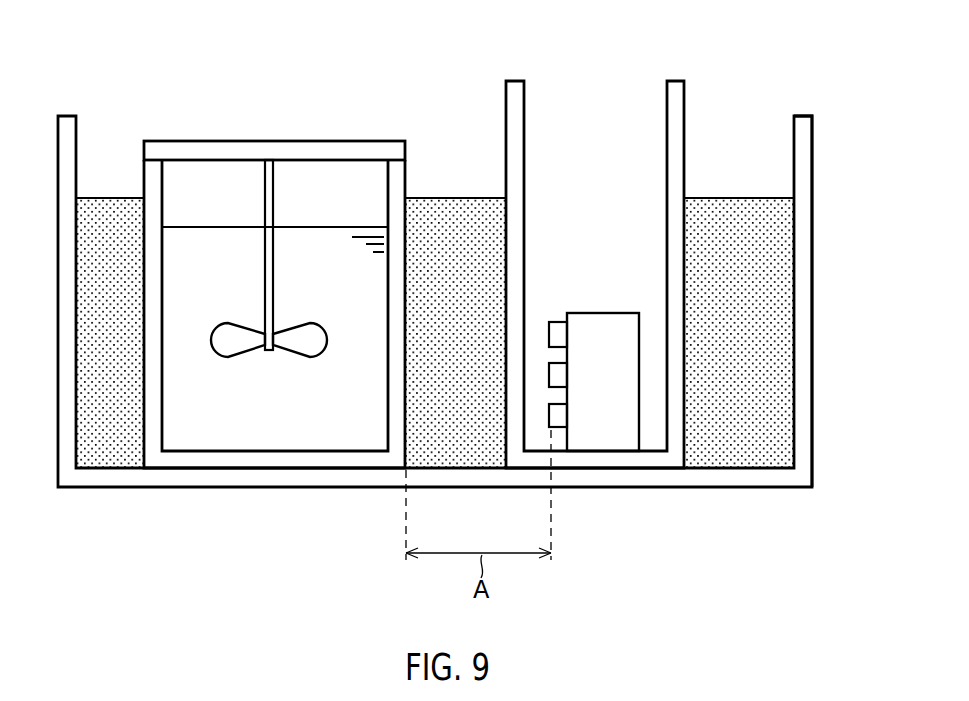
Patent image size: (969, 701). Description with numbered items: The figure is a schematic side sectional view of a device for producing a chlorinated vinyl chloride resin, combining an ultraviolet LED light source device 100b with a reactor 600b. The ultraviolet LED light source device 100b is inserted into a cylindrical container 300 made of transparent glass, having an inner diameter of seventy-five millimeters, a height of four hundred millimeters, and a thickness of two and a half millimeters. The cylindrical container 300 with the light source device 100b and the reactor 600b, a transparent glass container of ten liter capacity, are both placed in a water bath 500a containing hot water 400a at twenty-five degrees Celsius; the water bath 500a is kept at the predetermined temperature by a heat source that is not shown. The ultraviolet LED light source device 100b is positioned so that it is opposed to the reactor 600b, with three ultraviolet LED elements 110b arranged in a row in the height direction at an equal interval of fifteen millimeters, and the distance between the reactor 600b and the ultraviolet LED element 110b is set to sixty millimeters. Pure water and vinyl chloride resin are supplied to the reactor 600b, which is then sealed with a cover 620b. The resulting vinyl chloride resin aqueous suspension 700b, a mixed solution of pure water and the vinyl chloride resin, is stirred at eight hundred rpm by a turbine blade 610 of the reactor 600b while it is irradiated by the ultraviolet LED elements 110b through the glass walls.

The vinyl chloride resin aqueous suspension 700b is at (200, 418).
The hot water 400a is at (737, 215).
The reactor 600b is at (400, 172).
The cover 620b is at (169, 152).
The turbine blade 610 is at (305, 342).
The cylindrical container 300 is at (515, 92).
The water bath 500a is at (800, 128).
The ultraviolet LED light source device 100b is at (602, 335).
The ultraviolet LED element 110b is at (560, 335).